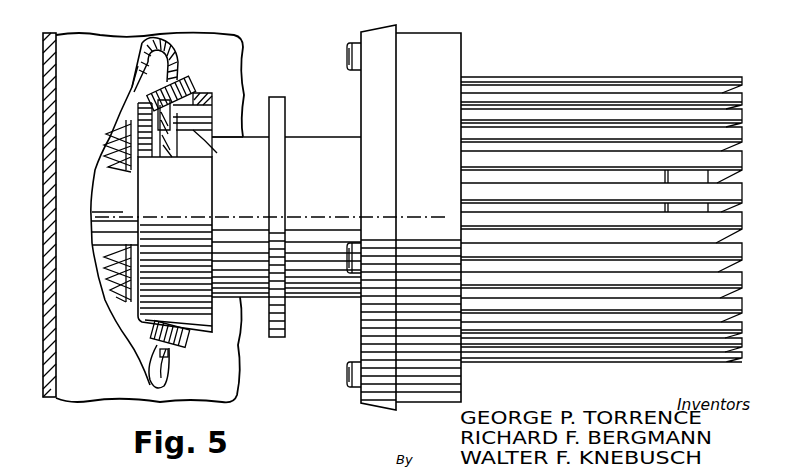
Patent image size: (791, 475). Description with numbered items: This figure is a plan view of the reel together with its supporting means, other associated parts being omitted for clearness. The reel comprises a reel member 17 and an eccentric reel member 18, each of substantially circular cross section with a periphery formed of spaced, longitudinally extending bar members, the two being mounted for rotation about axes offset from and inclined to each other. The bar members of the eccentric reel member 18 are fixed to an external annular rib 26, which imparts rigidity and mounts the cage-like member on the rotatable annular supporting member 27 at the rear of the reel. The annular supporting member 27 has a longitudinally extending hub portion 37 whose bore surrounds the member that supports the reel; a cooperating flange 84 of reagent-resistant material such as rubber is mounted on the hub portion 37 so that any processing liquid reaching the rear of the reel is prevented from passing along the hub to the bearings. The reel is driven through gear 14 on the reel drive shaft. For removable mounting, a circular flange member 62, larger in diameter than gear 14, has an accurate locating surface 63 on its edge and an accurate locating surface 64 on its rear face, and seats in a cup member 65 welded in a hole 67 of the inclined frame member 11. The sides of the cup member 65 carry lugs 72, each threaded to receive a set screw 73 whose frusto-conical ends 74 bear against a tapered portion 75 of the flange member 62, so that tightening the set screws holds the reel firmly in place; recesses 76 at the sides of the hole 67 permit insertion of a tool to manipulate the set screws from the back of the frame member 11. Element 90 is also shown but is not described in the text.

The inclined frame member 11 is at (85, 371).
The gear 14 is at (108, 267).
The reel member 17 is at (546, 103).
The eccentric reel member 18 is at (618, 92).
The external annular rib 26 is at (425, 185).
The annular supporting member 27 is at (377, 197).
The hub portion 37 is at (305, 210).
The flange member 62 is at (179, 153).
The locating surface 63 is at (221, 152).
The locating surface 64 is at (138, 120).
The cup member 65 is at (215, 203).
The hole 67 is at (130, 83).
The lugs 72 is at (188, 79).
The set screw 73 is at (140, 67).
The frusto-conical ends 74 is at (213, 110).
The tapered portion 75 is at (270, 217).
The recesses 76 is at (145, 53).
The cooperating flange 84 is at (284, 104).
The upper teeth 90 is at (98, 208).